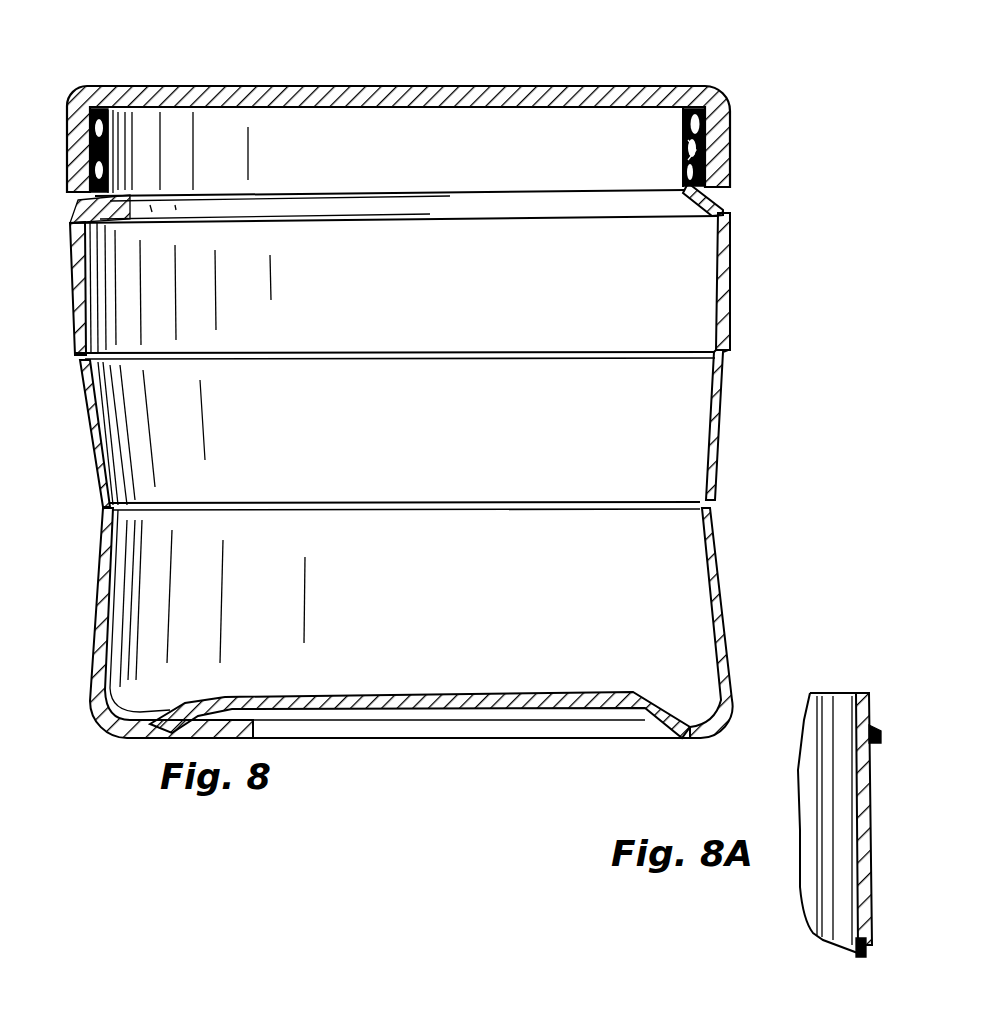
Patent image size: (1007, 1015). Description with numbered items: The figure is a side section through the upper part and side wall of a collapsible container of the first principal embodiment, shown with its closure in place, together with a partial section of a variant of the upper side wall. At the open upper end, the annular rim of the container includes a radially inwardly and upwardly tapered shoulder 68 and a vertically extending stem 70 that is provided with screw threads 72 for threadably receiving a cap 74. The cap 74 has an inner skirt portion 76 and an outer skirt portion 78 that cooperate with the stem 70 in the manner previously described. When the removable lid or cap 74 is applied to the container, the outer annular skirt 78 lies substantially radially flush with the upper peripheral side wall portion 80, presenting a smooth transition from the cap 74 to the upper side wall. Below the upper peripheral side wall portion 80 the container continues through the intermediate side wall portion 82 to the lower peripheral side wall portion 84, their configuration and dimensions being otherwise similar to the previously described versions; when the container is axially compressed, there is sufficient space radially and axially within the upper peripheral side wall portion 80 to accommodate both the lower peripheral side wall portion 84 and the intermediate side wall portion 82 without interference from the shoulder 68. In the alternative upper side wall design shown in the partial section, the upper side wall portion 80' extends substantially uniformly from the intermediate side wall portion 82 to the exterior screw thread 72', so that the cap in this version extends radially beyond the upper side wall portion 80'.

In FIG. 8, the shoulder 68 is at (723, 203).
In FIG. 8, the stem 70 is at (697, 120).
In FIG. 8, the screw threads 72 is at (657, 162).
In FIG. 8, the cap 74 is at (564, 83).
In FIG. 8, the cap inner skirt portion 76 is at (688, 163).
In FIG. 8, the cap outer skirt portion 78 is at (727, 150).
In FIG. 8, the upper peripheral side wall portion 80 is at (751, 281).
In FIG. 8, the intermediate side wall portion 82 is at (722, 428).
In FIG. 8A, the intermediate side wall portion 82 is at (863, 945).
In FIG. 8, the lower peripheral side wall portion 84 is at (712, 558).
In FIG. 8A, the exterior screw thread 72' is at (893, 703).
In FIG. 8A, the upper side wall portion 80' is at (864, 824).